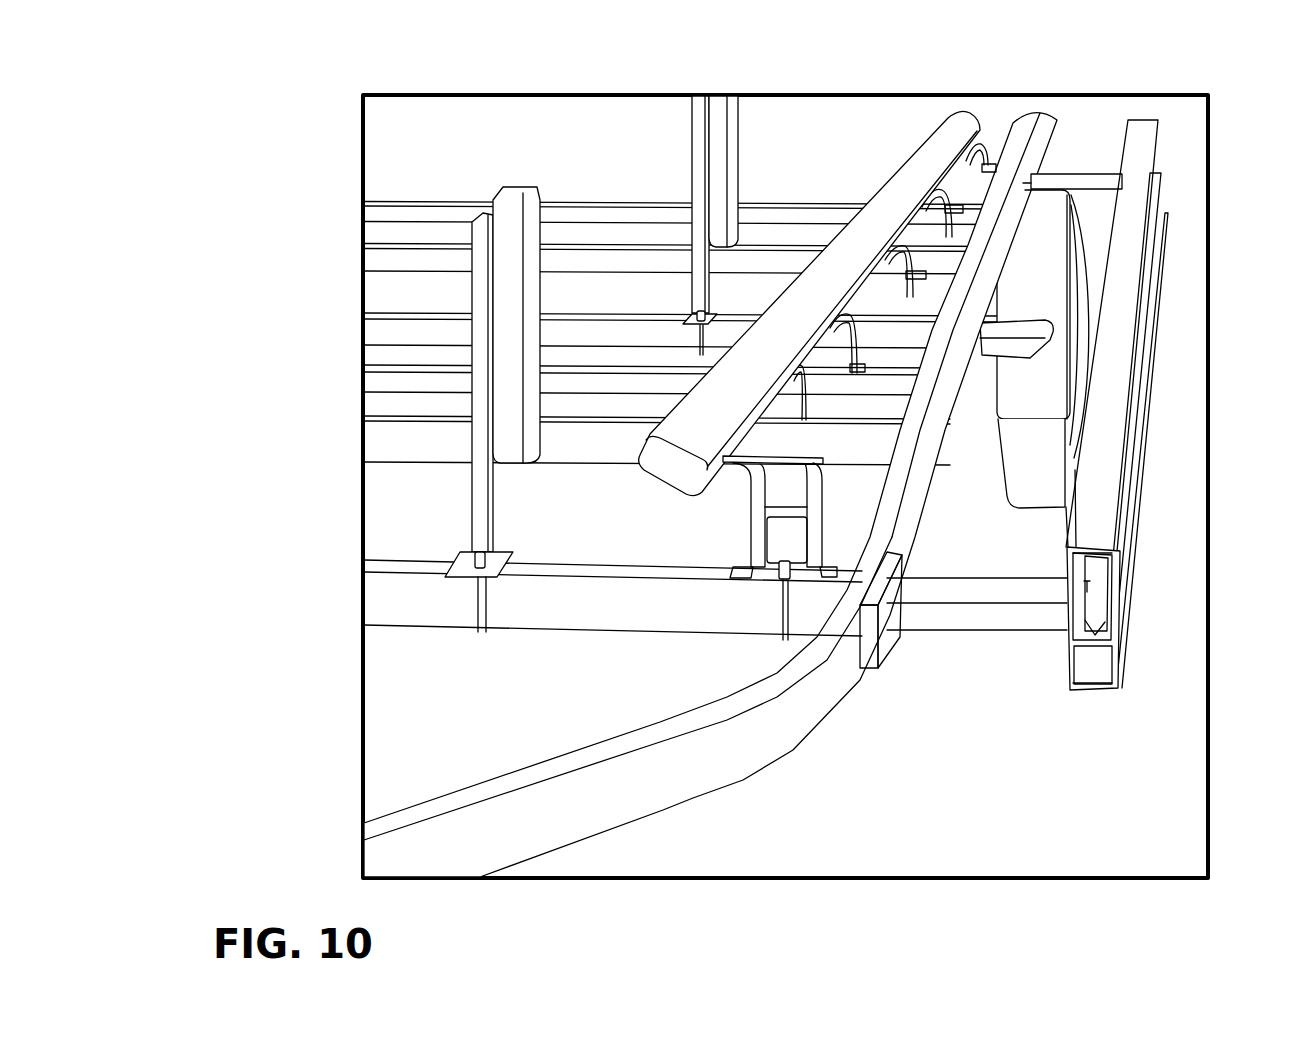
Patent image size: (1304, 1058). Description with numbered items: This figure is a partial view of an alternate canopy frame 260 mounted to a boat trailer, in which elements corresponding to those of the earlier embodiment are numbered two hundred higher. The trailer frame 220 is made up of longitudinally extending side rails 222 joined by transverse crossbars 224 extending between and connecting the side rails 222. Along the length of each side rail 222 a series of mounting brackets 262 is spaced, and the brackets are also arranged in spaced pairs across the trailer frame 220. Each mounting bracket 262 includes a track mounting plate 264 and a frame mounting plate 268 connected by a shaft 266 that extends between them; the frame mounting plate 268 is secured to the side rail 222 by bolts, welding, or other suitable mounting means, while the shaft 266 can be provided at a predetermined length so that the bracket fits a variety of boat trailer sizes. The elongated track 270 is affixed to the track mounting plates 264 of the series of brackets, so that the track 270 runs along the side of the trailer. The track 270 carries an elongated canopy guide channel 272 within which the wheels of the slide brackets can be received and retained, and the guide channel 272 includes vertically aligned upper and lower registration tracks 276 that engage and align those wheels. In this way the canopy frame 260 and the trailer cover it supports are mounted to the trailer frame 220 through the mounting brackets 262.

The trailer frame 220 is at (480, 820).
The side rails 222 is at (933, 463).
The crossbars 224 is at (423, 605).
The canopy frame 260 is at (1150, 116).
The mounting bracket 262 is at (1090, 168).
The track mounting plate 264 is at (1169, 724).
The shaft 266 is at (1067, 177).
The frame mounting plate 268 is at (990, 178).
The track 270 is at (1118, 345).
The canopy guide channel 272 is at (1094, 585).
The registration tracks 276 is at (1089, 552).